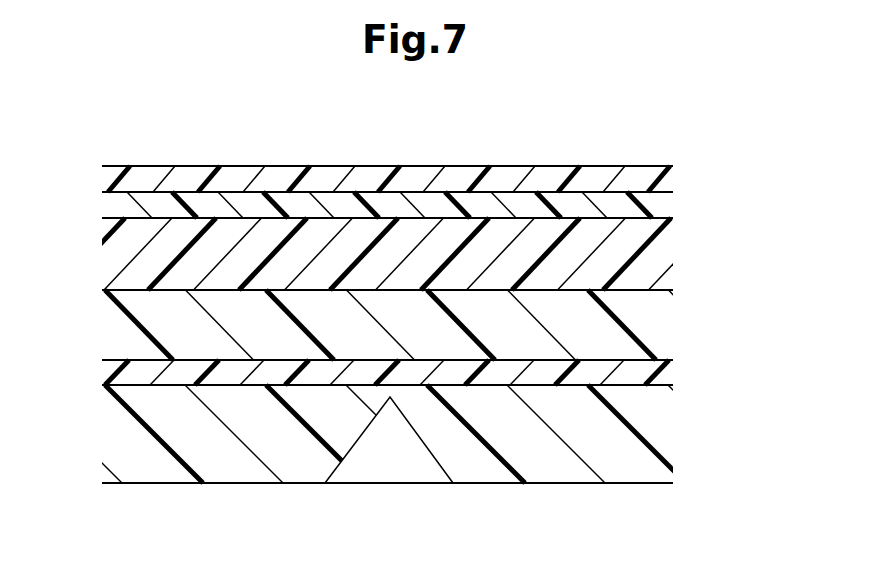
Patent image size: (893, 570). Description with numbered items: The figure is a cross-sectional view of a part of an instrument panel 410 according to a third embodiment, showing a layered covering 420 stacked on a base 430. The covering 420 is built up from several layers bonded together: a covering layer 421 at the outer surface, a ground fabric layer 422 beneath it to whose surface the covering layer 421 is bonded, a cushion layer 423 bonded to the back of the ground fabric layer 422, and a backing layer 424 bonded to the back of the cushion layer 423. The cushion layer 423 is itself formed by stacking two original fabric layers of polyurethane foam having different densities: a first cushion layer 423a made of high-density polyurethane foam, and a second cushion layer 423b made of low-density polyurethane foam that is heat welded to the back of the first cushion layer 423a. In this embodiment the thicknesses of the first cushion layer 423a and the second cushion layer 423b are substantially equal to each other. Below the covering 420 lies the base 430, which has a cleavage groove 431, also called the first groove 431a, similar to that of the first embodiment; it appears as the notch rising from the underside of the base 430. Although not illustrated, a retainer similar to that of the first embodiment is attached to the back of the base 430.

The laminated sheet 410 is at (562, 156).
The covering 420 is at (93, 168).
The covering layer 421 is at (668, 183).
The ground fabric layer 422 is at (668, 207).
The cushion layer 423 is at (765, 243).
The first cushion layer 423a is at (667, 260).
The second cushion layer 423b is at (667, 317).
The backing layer 424 is at (667, 370).
The base 430 is at (93, 385).
The cleavage groove 431 is at (389, 460).
The first groove 431a is at (350, 457).